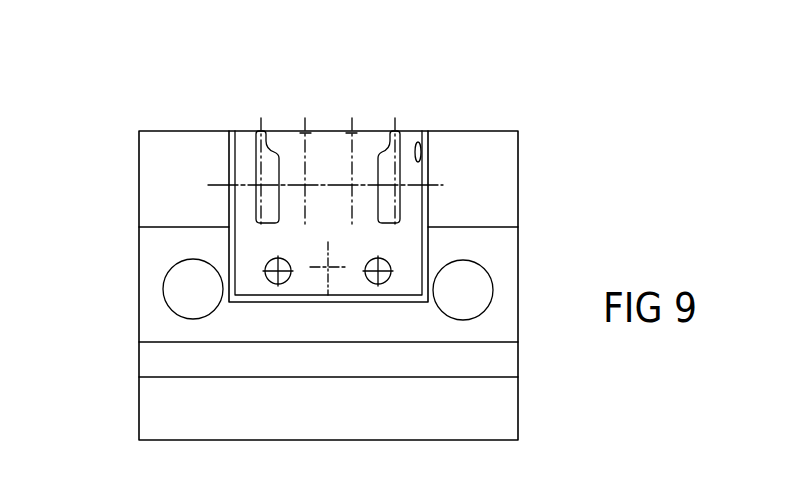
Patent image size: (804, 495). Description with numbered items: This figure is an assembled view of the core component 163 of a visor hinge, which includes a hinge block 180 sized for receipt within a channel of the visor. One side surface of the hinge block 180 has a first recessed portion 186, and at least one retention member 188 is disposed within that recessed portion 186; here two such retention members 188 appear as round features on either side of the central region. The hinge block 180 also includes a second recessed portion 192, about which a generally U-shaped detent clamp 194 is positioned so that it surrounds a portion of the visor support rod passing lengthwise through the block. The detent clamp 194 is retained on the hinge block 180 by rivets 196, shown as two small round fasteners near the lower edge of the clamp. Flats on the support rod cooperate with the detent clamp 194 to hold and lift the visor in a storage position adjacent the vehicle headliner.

The core component 163 is at (168, 108).
The hinge block 180 is at (519, 156).
The first recessed portion 186 is at (170, 228).
The retention member 188 is at (185, 290).
The second recessed portion 192 is at (419, 168).
The detent clamp 194 is at (411, 128).
The rivets 196 is at (373, 279).